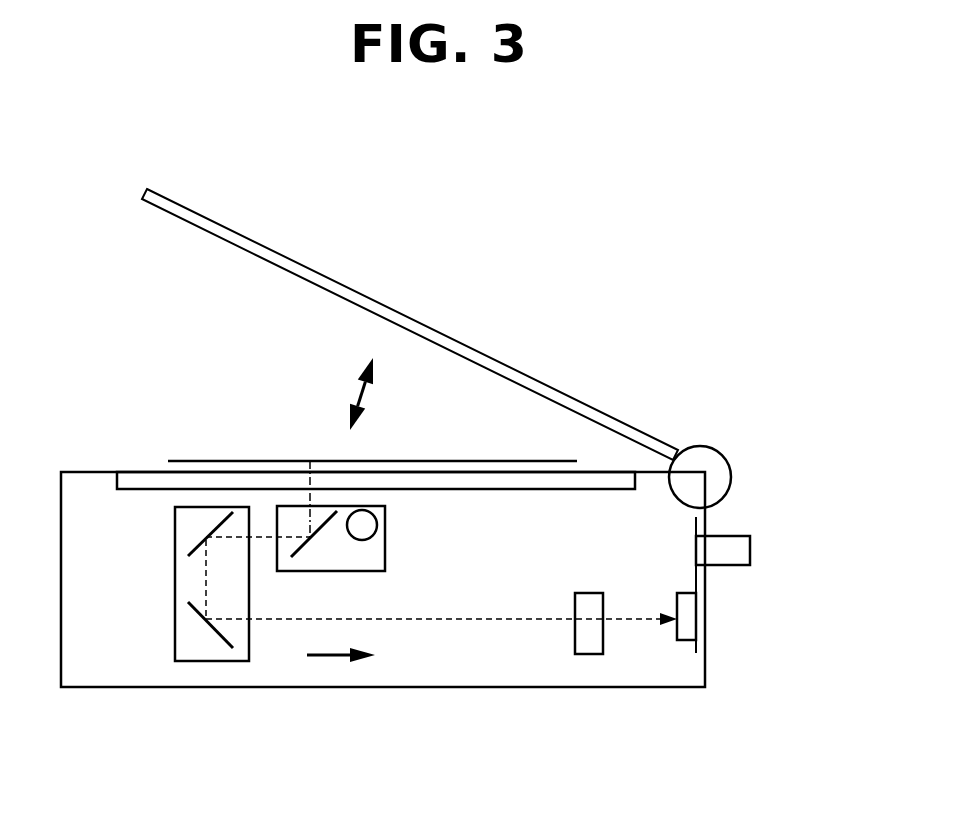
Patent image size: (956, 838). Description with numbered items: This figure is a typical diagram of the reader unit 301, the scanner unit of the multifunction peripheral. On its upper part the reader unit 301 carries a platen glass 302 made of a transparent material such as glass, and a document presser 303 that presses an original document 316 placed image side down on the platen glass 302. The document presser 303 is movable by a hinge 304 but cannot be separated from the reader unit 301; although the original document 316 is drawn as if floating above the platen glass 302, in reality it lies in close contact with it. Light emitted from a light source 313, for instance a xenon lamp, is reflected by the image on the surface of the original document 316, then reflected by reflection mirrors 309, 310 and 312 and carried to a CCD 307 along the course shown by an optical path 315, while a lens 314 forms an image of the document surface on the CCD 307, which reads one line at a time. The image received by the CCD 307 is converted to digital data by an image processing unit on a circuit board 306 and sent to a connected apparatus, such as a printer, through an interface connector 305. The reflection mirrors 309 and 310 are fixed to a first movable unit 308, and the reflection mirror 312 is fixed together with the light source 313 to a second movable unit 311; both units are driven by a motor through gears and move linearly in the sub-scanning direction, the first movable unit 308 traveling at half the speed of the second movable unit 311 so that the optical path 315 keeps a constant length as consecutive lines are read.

The reader unit 301 is at (118, 690).
The platen glass 302 is at (136, 480).
The document presser 303 is at (385, 306).
The hinge 304 is at (710, 447).
The interface connector 305 is at (745, 548).
The circuit board 306 is at (705, 643).
The CCD 307 is at (678, 593).
The first movable unit 308 is at (238, 662).
The reflection mirror 309 is at (190, 608).
The reflection mirror 310 is at (190, 553).
The second movable unit 311 is at (300, 571).
The reflection mirror 312 is at (293, 548).
The light source 313 is at (378, 515).
The lens 314 is at (587, 655).
The optical path 315 is at (480, 619).
The original document 316 is at (256, 460).